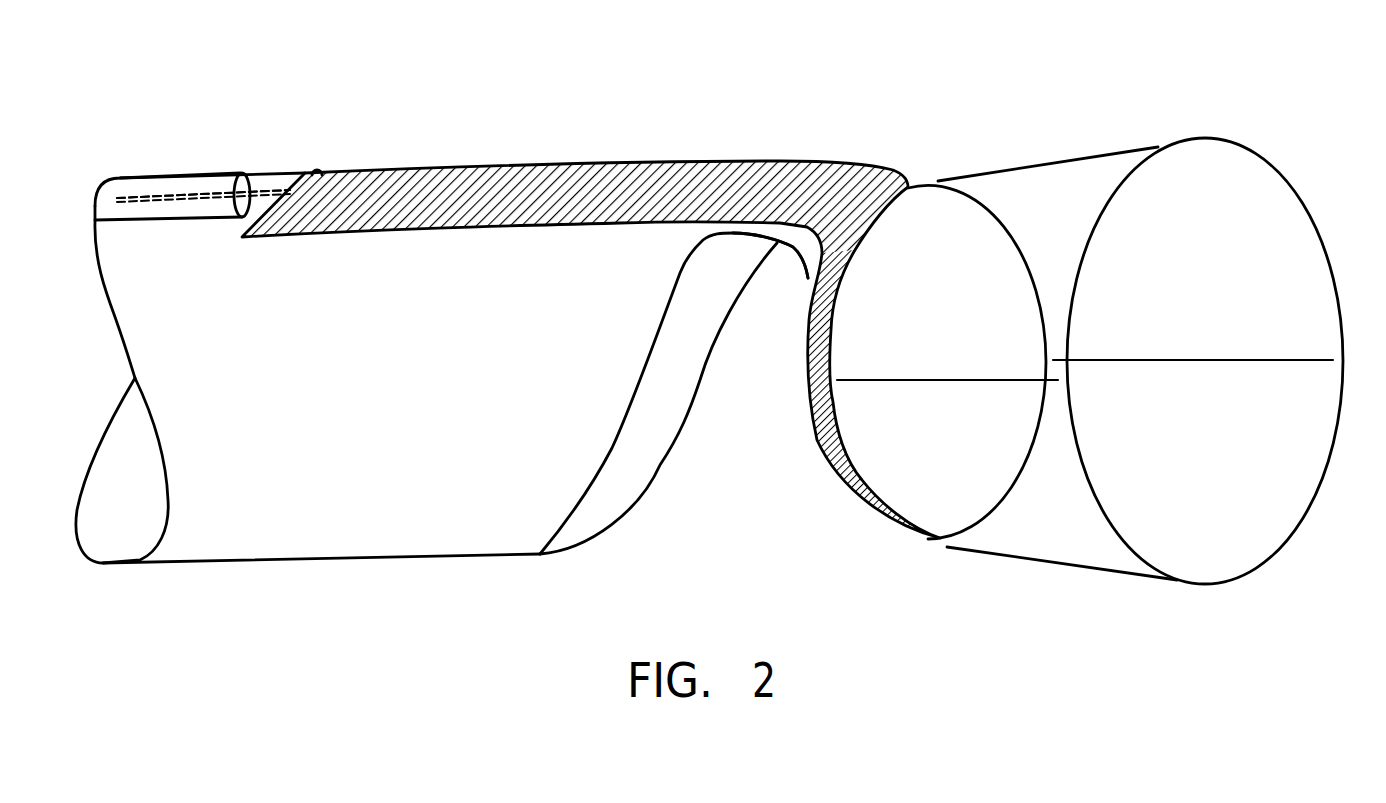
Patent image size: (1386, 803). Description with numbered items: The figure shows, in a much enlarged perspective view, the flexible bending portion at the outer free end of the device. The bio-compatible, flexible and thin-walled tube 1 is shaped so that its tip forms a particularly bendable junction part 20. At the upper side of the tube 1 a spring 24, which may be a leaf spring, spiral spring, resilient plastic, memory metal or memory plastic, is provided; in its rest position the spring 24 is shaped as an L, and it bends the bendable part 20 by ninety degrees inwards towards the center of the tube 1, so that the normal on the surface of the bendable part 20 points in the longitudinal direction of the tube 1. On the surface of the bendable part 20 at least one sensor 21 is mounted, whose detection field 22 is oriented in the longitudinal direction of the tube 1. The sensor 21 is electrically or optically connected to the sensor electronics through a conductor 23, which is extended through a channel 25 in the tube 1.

The tube 1 is at (243, 523).
The bendable part 20 is at (800, 267).
The sensor 21 is at (987, 260).
The detection field 22 is at (1250, 523).
The conductor 23 is at (280, 187).
The spring 24 is at (740, 157).
The channel 25 is at (183, 173).